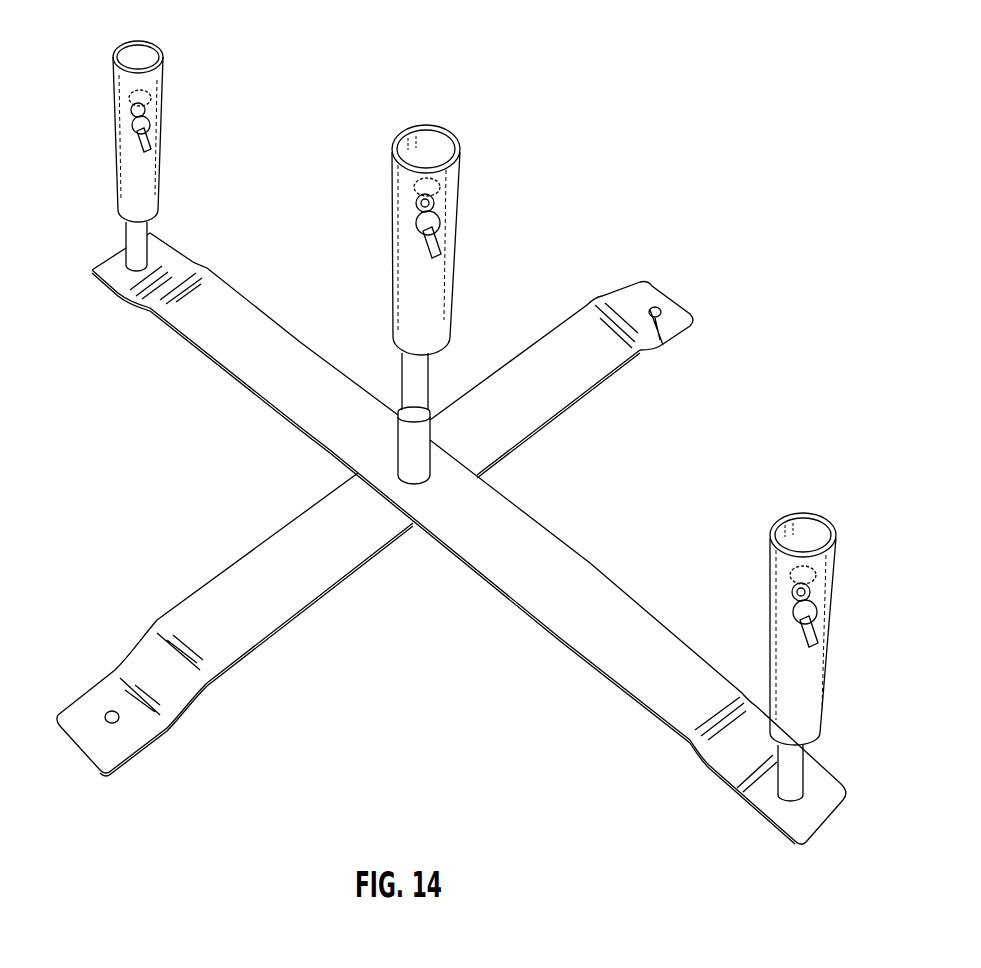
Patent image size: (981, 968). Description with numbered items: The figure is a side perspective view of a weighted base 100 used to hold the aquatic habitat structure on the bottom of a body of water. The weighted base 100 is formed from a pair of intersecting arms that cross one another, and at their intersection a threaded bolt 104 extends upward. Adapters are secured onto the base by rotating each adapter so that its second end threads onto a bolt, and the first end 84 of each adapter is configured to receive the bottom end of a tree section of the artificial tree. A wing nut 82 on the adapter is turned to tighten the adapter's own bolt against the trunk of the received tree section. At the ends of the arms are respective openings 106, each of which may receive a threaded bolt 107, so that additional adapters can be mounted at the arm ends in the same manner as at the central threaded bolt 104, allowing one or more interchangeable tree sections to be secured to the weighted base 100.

The weighted base 100 is at (700, 457).
The threaded bolt 104 is at (432, 372).
The opening 106 is at (105, 716).
The threaded bolt 107 is at (136, 243).
The wing nut 82 is at (445, 222).
The first end 84 is at (428, 142).